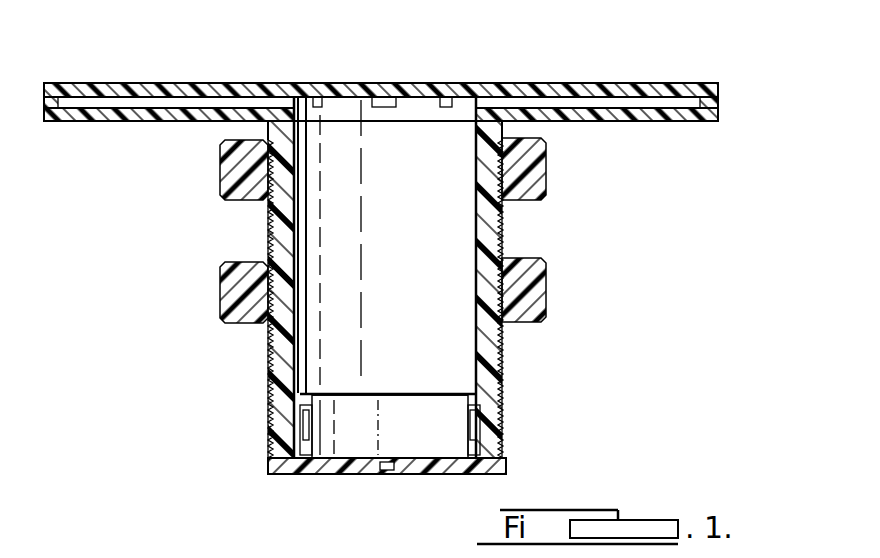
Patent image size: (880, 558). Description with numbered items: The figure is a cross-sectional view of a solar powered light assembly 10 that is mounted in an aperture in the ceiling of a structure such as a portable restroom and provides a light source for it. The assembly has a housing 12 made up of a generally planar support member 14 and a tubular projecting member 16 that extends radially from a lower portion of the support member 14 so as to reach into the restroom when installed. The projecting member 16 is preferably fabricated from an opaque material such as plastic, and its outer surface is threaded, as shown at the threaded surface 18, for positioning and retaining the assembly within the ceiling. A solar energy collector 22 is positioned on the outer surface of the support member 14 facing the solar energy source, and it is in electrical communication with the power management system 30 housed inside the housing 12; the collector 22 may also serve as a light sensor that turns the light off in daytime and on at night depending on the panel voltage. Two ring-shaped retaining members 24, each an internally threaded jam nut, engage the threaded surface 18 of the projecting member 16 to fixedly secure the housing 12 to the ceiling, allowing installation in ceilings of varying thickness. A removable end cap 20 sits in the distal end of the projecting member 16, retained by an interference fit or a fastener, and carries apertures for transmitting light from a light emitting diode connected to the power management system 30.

The solar powered light assembly 10 is at (629, 38).
The housing 12 is at (423, 73).
The support member 14 is at (480, 83).
The projecting member 16 is at (503, 372).
The threaded surface 18 is at (487, 410).
The end cap 20 is at (410, 476).
The solar energy collector 22 is at (428, 83).
The retaining member 24 is at (548, 288).
The power management system 30 is at (349, 388).